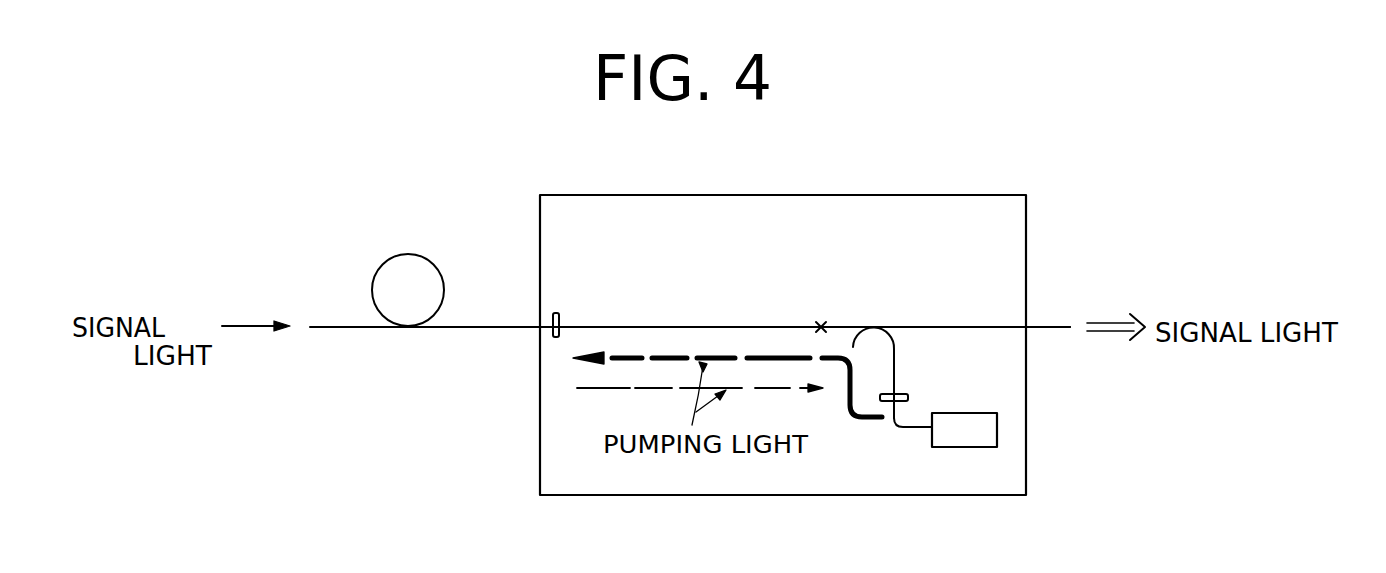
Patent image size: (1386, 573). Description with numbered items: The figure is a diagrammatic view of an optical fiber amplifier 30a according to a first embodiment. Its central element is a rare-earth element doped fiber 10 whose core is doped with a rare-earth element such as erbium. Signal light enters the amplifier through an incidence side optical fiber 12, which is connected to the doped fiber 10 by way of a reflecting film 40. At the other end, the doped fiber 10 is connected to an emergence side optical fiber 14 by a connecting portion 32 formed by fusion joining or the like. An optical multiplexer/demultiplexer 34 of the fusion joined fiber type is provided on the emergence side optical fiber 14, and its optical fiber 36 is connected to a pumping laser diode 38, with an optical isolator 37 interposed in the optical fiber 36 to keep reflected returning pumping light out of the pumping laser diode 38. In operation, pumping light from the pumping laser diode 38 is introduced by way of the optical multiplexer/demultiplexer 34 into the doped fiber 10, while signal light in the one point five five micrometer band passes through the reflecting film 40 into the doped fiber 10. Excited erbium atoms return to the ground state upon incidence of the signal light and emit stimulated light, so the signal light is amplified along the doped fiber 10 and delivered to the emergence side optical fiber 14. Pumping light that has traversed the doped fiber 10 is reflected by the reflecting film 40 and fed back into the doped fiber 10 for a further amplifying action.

The optical fiber amplifier 30a is at (756, 195).
The rare-earth element doped fiber 10 is at (684, 327).
The incidence side optical fiber 12 is at (408, 254).
The reflecting film 40 is at (556, 313).
The connecting portion 32 is at (821, 322).
The optical multiplexer/demultiplexer 34 is at (876, 327).
The emergence side optical fiber 14 is at (964, 327).
The optical fiber 36 is at (897, 356).
The optical isolator 37 is at (908, 398).
The pumping laser diode 38 is at (963, 447).